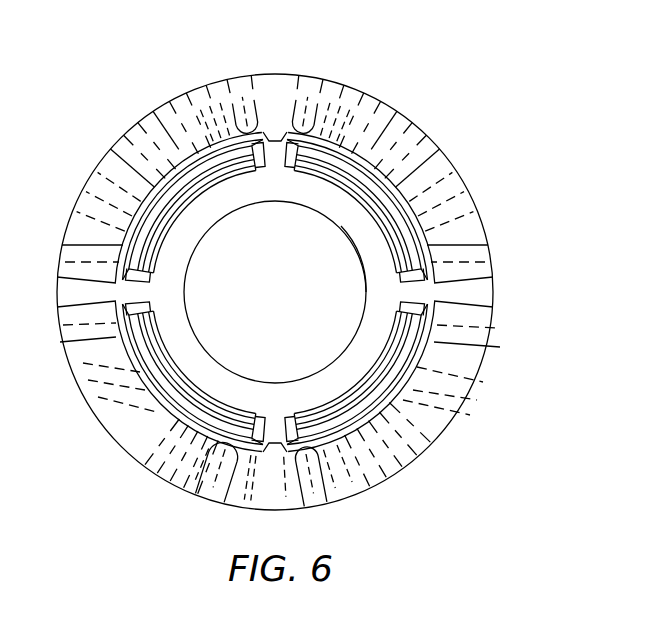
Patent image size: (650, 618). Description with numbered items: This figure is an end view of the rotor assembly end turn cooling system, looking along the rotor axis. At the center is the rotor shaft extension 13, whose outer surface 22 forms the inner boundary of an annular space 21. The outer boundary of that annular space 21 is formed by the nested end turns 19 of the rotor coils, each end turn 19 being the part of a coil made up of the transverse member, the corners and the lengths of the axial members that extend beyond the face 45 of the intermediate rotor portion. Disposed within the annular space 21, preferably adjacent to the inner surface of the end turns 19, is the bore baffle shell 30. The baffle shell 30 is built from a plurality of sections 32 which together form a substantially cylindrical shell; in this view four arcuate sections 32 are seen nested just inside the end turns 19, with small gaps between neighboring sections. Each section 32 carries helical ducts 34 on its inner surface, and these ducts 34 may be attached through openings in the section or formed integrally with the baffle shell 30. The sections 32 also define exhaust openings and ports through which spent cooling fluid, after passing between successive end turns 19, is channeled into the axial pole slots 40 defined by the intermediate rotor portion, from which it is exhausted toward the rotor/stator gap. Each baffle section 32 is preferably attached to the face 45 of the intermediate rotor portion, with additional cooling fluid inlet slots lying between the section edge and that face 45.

The rotor shaft extension 13 is at (300, 294).
The end turn 19 is at (102, 253).
The annular space 21 is at (393, 292).
The outer surface 22 is at (358, 262).
The bore baffle shell 30 is at (117, 292).
The section 32 is at (165, 183).
The helical duct 34 is at (253, 168).
The axial pole slot 40 is at (238, 78).
The face 45 is at (80, 363).